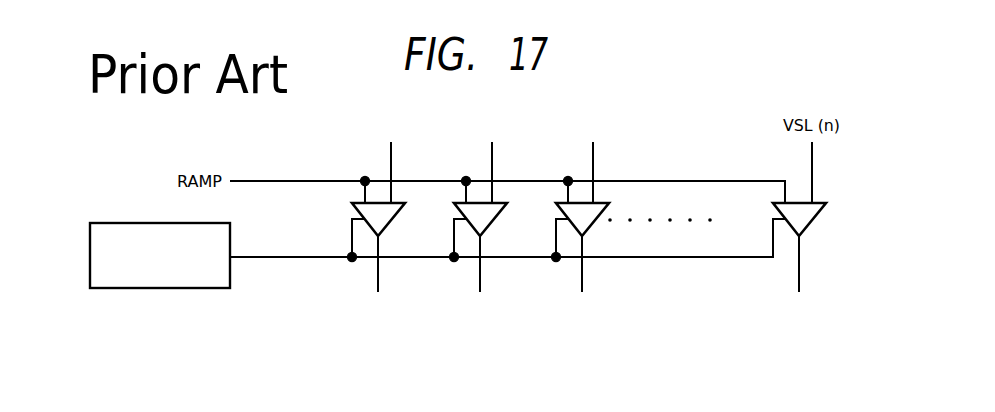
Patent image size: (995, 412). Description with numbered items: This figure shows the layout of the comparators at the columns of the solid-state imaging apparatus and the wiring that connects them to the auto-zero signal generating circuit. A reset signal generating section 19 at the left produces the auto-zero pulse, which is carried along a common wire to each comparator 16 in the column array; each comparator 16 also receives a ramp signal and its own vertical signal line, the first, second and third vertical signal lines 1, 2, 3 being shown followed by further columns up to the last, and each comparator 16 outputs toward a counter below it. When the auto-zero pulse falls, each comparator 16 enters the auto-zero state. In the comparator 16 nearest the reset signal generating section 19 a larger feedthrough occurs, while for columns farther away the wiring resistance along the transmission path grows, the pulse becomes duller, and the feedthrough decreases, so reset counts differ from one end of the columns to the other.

The comparator 16 is at (386, 241).
The reset signal generating section 19 is at (132, 222).
The vertical signal line VSL 1 is at (391, 159).
The vertical signal line VSL 2 is at (494, 159).
The vertical signal line VSL 3 is at (596, 159).